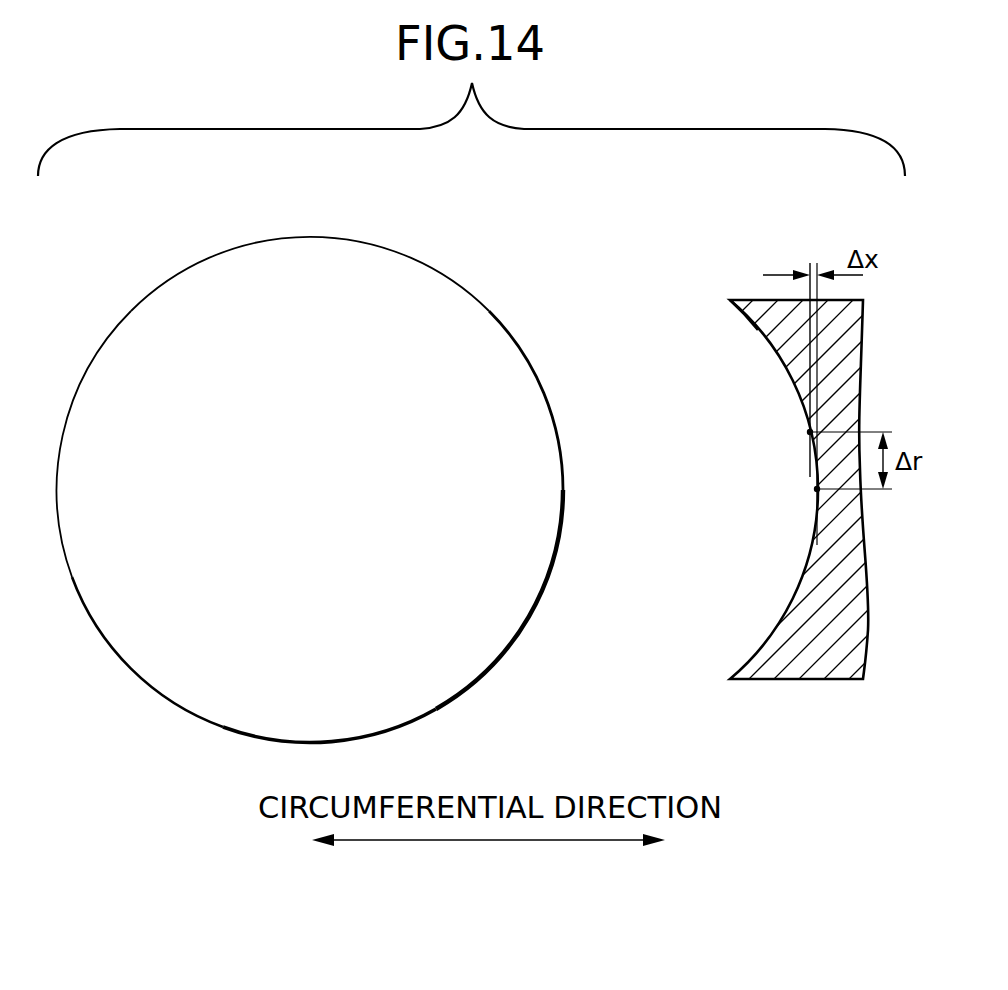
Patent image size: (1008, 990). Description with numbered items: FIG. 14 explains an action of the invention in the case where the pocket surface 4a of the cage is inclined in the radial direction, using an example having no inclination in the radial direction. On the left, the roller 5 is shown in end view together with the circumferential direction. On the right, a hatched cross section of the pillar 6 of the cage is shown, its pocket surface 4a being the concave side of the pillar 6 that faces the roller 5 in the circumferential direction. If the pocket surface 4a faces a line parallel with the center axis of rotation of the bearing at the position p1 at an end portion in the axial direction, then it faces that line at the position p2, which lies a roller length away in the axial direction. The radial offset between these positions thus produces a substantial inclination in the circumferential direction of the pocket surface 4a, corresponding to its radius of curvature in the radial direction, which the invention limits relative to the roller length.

The pocket surface 4a is at (745, 320).
The roller 5 is at (481, 680).
The pillar 6 is at (805, 680).
The position P1 p1 is at (817, 489).
The position P2 p2 is at (810, 432).